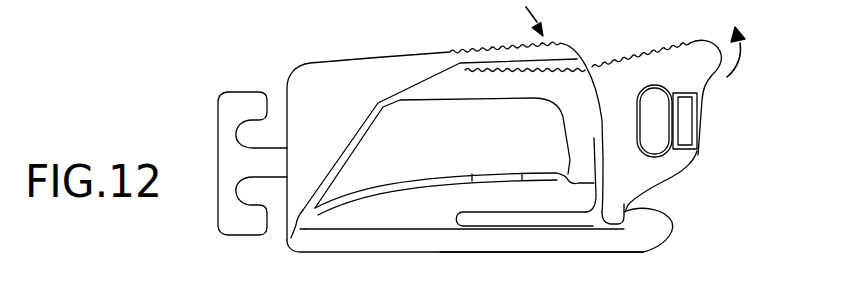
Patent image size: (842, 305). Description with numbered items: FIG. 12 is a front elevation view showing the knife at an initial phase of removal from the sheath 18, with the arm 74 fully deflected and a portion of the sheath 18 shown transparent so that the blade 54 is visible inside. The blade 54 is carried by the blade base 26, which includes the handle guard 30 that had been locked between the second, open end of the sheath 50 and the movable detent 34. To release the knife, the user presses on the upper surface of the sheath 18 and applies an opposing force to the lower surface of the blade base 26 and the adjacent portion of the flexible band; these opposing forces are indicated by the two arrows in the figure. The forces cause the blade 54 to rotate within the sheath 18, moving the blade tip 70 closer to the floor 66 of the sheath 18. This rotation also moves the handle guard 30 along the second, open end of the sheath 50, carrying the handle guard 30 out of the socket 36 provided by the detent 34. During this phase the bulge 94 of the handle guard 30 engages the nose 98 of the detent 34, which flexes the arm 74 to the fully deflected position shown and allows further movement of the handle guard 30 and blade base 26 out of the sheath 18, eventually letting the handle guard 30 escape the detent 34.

The sheath 18 is at (325, 110).
The blade base 26 is at (690, 69).
The handle guard 30 is at (606, 216).
The detent 34 is at (643, 242).
The socket 36 is at (627, 219).
The second, open end of the sheath 50 is at (582, 70).
The blade 54 is at (478, 161).
The floor 66 is at (384, 229).
The blade tip 70 is at (317, 216).
The arm 74 is at (535, 245).
The bulge 94 is at (615, 206).
The nose 98 is at (628, 207).